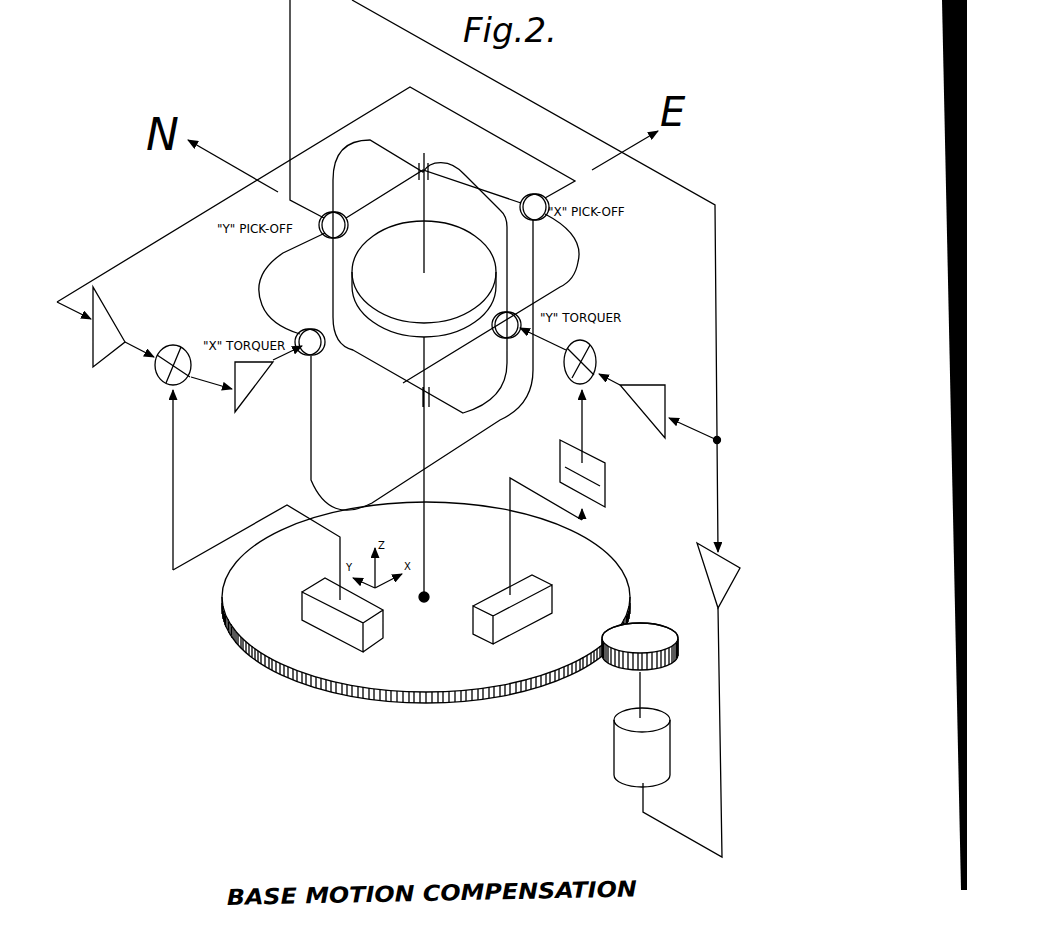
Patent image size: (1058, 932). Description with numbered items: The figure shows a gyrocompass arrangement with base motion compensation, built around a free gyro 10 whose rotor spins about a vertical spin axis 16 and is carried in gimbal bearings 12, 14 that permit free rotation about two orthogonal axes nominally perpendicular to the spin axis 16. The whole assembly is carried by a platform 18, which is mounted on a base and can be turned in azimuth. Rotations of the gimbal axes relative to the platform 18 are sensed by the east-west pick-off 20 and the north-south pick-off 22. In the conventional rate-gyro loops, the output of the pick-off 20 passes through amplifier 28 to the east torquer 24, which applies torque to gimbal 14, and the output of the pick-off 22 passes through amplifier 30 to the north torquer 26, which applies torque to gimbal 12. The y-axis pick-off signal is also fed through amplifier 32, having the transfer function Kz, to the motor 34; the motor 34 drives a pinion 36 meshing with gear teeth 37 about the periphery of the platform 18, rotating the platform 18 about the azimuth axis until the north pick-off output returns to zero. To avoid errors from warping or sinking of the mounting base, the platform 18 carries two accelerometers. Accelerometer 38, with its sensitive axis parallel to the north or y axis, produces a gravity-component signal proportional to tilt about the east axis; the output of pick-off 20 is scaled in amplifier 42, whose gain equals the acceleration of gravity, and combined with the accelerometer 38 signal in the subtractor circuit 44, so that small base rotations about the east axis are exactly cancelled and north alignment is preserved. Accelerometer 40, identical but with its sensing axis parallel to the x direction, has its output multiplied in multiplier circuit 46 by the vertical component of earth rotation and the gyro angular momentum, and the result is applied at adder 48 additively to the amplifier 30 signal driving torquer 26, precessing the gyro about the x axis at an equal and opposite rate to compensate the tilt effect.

The free gyro 10 is at (462, 274).
The gimbal bearing 12 is at (380, 142).
The gimbal bearing 14 is at (578, 252).
The spin axis 16 is at (425, 212).
The platform 18 is at (589, 586).
The pick-off 20 is at (538, 193).
The pick-off 22 is at (338, 213).
The torquer 24 is at (310, 328).
The torquer 26 is at (501, 340).
The amplifier 28 is at (265, 372).
The amplifier 30 is at (672, 367).
The amplifier 32 is at (728, 566).
The motor 34 is at (667, 728).
The pinion 36 is at (672, 637).
The gear teeth 37 is at (567, 670).
The accelerometer 38 is at (377, 637).
The accelerometer 40 is at (545, 553).
The amplifier 42 is at (112, 313).
The subtractor circuit 44 is at (178, 347).
The multiplier circuit 46 is at (599, 443).
The adder 48 is at (598, 342).